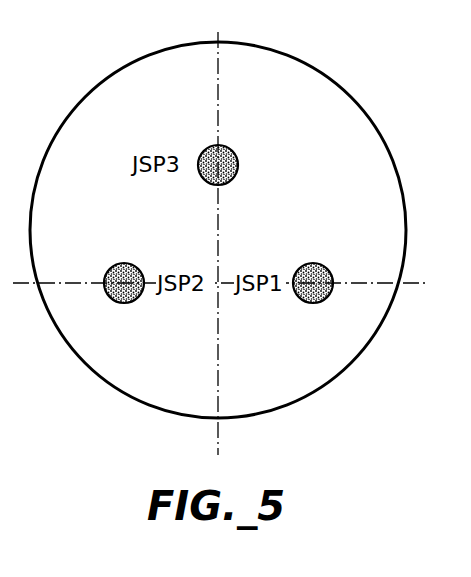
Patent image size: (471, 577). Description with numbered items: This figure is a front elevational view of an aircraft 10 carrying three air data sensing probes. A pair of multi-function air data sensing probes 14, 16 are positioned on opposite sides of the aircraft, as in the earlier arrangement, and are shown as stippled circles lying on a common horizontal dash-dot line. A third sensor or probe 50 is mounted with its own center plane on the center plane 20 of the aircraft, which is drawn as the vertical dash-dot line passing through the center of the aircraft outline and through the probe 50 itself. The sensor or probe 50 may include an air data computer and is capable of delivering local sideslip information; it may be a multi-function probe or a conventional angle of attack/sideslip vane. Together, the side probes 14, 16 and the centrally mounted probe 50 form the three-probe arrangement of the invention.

The aircraft 10 is at (342, 373).
The center plane of the aircraft 20 is at (217, 101).
The third sensor or probe 50 is at (238, 160).
The multi-function air data sensing probe 14 is at (313, 303).
The multi-function air data sensing probe 16 is at (125, 303).